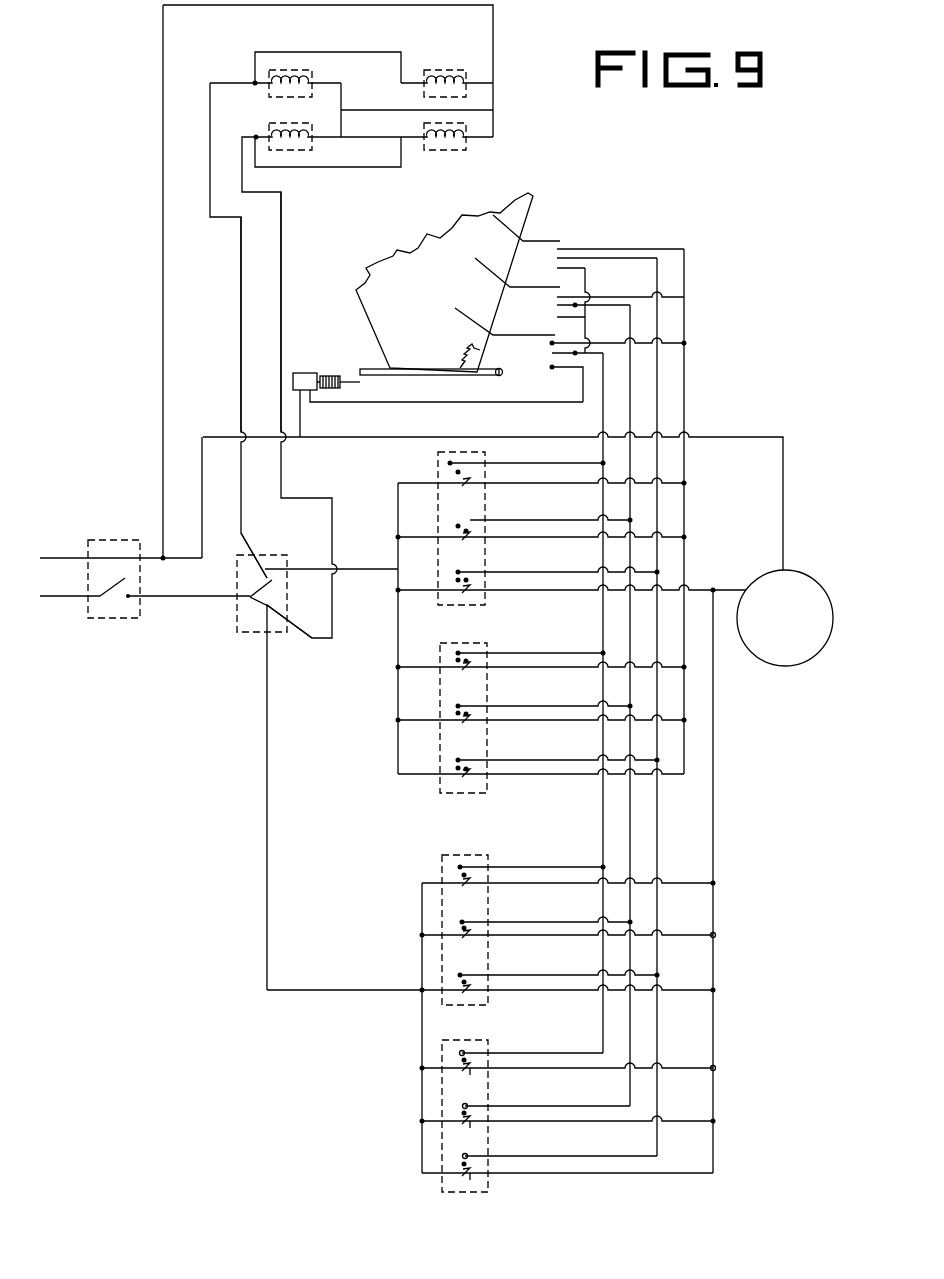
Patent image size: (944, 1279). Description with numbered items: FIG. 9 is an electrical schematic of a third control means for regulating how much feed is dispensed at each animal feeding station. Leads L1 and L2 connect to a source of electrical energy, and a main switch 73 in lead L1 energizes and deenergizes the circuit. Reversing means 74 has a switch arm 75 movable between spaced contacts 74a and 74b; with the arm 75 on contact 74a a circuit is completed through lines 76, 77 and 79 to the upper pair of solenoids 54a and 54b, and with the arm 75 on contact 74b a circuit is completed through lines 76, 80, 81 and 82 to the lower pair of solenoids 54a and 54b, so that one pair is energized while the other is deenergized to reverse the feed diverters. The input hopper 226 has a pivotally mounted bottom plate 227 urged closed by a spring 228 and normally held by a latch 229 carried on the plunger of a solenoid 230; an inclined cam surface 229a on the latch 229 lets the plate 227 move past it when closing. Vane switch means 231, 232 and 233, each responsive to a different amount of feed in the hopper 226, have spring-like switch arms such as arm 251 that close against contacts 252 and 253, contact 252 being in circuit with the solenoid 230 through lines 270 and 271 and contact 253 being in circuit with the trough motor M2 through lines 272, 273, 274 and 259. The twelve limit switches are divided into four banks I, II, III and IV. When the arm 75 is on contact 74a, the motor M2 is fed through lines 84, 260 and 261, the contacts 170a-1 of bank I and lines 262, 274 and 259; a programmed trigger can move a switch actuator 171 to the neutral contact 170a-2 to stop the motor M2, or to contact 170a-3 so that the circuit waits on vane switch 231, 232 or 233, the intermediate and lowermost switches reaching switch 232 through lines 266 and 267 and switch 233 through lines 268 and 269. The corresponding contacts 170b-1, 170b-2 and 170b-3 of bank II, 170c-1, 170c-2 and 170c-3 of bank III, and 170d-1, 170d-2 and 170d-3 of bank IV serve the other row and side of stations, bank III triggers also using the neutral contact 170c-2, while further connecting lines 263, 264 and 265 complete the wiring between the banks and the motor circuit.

The line 76 is at (163, 444).
The line 79 is at (332, 40).
The line 80 is at (396, 110).
The line 81 is at (378, 167).
The solenoid 54a is at (270, 80).
The solenoid 54b is at (462, 50).
The line 82 is at (281, 312).
The line 77 is at (241, 393).
The input hopper 226 is at (393, 248).
The vane switch means 233 is at (498, 238).
The vane switch means 232 is at (472, 273).
The vane switch means 231 is at (450, 315).
The spring 228 is at (458, 356).
The bottom plate 227 is at (370, 368).
The line 270 is at (486, 404).
The latch 229 is at (335, 360).
The inclined cam surface 229a is at (362, 386).
The solenoid 230 is at (293, 382).
The line 271 is at (300, 415).
The line 259 is at (432, 440).
The contact 253 is at (551, 343).
The switch arm 251 is at (552, 354).
The contact 252 is at (551, 369).
The line 272 is at (684, 343).
The line 273 is at (684, 383).
The conductor 263 is at (684, 745).
The conductor 265 is at (603, 415).
The line 267 is at (630, 501).
The line 269 is at (657, 553).
The line 274 is at (733, 580).
The trough motor M2 is at (808, 580).
The lead L1 is at (68, 558).
The lead L2 is at (70, 596).
The main switch 73 is at (113, 573).
The reversing means 74 is at (240, 640).
The contact 74a is at (256, 581).
The switch arm 75 is at (250, 594).
The contact 74b is at (258, 613).
The line 84 is at (302, 568).
The limit switch bank I is at (378, 543).
The line 260 is at (398, 624).
The line 261 is at (398, 486).
The conductor 264 is at (554, 468).
The line 266 is at (470, 520).
The line 268 is at (458, 572).
The contact 170a-3 is at (450, 463).
The contact 170a-2 is at (458, 472).
The contact 170a-1 is at (470, 487).
The switch actuator 171 is at (464, 483).
The line 262 is at (570, 488).
The limit switch bank II is at (385, 728).
The fixed contact 170b-3 is at (458, 653).
The movable contact 170b-2 is at (468, 662).
The contact conductor 170b-1 is at (472, 671).
The limit switch bank III is at (413, 920).
The fixed contact 170c-3 is at (460, 866).
The contact 170c-2 is at (468, 876).
The contact conductor 170c-1 is at (472, 886).
The limit switch bank IV is at (395, 1071).
The fixed contact 170d-3 is at (462, 1053).
The contact conductor 170d-2 is at (468, 1061).
The contact conductor 170d-1 is at (472, 1072).